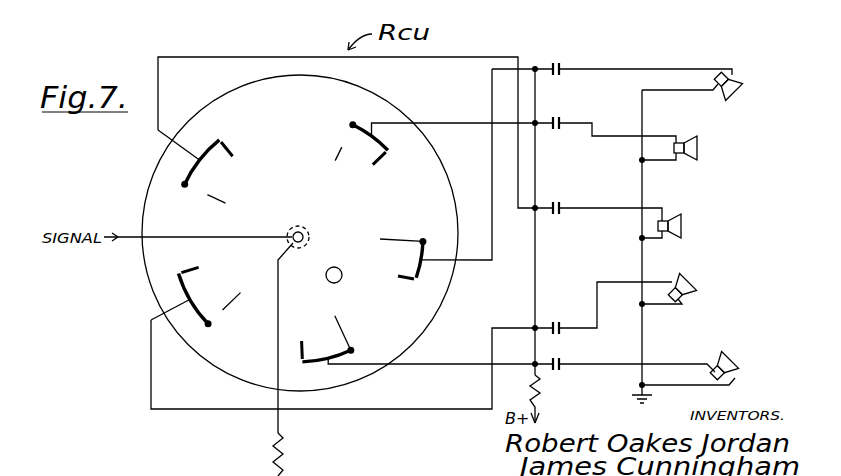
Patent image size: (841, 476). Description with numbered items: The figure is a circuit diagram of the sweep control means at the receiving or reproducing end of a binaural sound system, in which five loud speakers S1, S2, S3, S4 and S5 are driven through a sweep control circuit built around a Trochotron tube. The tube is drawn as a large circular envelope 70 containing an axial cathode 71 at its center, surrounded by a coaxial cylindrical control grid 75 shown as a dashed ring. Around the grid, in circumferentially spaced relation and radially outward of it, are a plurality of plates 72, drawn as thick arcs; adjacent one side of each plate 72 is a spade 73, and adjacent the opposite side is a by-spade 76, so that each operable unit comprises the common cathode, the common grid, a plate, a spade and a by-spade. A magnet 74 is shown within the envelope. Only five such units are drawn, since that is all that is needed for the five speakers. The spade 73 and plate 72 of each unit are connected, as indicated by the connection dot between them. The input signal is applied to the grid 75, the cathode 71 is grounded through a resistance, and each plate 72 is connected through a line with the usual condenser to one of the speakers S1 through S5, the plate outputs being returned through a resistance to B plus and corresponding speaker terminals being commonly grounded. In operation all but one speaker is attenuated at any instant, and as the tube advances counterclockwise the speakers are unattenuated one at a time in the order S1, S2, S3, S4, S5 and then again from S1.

The envelope 70 is at (143, 185).
The axial cathode 71 is at (303, 232).
The plates 72 is at (210, 146).
The spades 73 is at (220, 198).
The magnet 74 is at (334, 267).
The coaxial cylindrical control grid 75 is at (292, 227).
The by-spades 76 is at (230, 148).
The speaker S1 is at (733, 96).
The speaker S2 is at (698, 152).
The speaker S3 is at (682, 224).
The speaker S4 is at (697, 281).
The speaker S5 is at (731, 364).